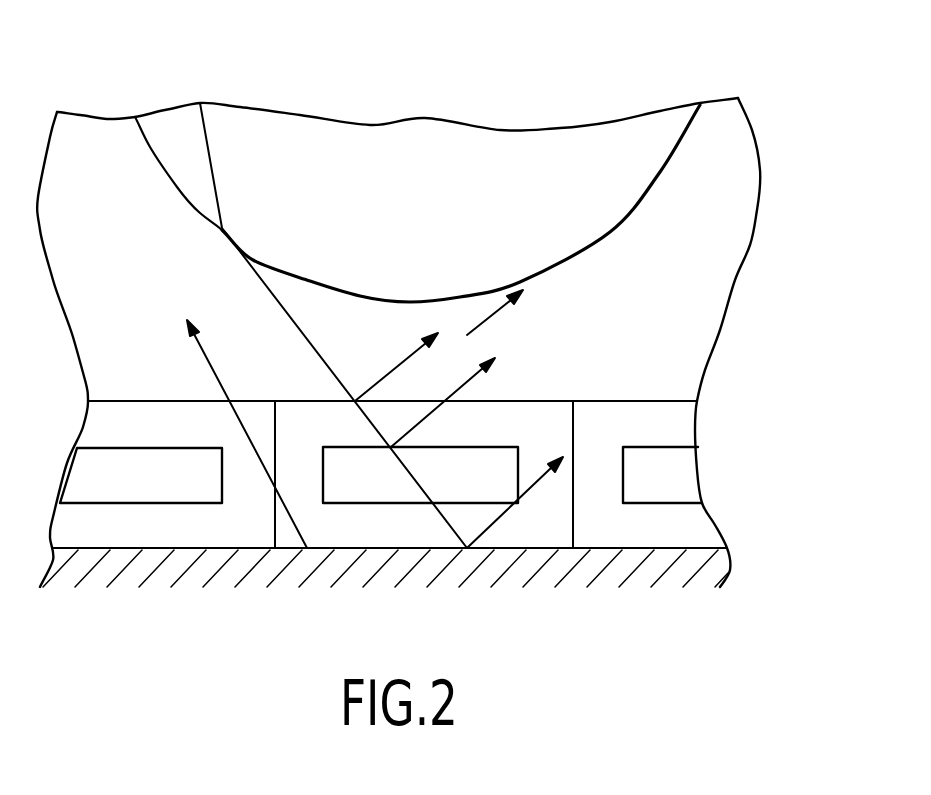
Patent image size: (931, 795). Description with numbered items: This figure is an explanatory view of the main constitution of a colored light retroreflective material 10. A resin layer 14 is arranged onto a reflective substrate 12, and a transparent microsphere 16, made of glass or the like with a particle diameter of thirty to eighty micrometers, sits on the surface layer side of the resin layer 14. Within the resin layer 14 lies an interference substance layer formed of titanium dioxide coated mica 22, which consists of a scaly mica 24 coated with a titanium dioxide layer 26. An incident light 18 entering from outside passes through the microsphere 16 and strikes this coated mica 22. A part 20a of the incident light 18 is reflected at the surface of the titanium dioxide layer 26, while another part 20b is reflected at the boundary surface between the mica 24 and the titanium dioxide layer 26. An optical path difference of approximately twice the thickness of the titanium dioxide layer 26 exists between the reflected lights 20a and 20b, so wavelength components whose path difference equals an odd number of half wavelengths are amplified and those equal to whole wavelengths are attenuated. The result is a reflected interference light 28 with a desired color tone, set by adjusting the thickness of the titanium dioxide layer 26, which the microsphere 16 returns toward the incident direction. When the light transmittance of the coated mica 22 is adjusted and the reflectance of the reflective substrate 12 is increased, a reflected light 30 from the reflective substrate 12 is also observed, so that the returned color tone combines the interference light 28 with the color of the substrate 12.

The retroreflective material 10 is at (628, 97).
The reflective substrate 12 is at (408, 628).
The resin layer 14 is at (735, 228).
The transparent microsphere 16 is at (657, 170).
The incident light 18 is at (250, 266).
The part of the incident light reflected at the titanium dioxide layer surface 20a is at (398, 357).
The part of the incident light reflected at the mica boundary 20b is at (415, 430).
The titanium dioxide coated mica 22 is at (415, 439).
The scaly mica 24 is at (672, 473).
The titanium dioxide layer 26 is at (680, 418).
The reflected interference light 28 is at (488, 325).
The reflected light from the reflective substrate 30 is at (220, 372).